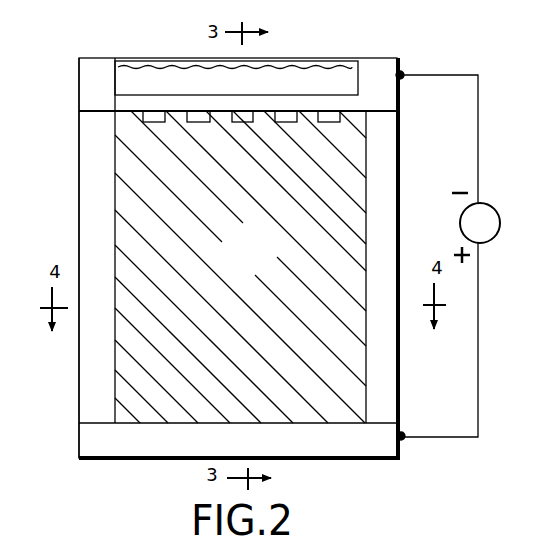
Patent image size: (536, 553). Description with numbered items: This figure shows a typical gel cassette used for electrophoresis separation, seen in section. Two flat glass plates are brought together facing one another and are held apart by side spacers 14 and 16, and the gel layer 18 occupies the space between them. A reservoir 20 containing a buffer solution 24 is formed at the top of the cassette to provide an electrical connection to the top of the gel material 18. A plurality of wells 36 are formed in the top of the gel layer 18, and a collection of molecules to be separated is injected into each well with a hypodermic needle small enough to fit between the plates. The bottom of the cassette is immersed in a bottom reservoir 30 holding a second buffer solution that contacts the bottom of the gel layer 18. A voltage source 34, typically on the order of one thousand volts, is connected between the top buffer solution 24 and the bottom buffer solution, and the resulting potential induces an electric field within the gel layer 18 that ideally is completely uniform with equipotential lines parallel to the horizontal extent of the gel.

The reservoir 20 is at (128, 48).
The side spacer 14 is at (92, 393).
The side spacer 16 is at (388, 165).
The gel layer 18 is at (253, 259).
The buffer solution 24 is at (125, 83).
The bottom reservoir 30 is at (383, 447).
The voltage source 34 is at (498, 213).
The wells 36 is at (200, 110).